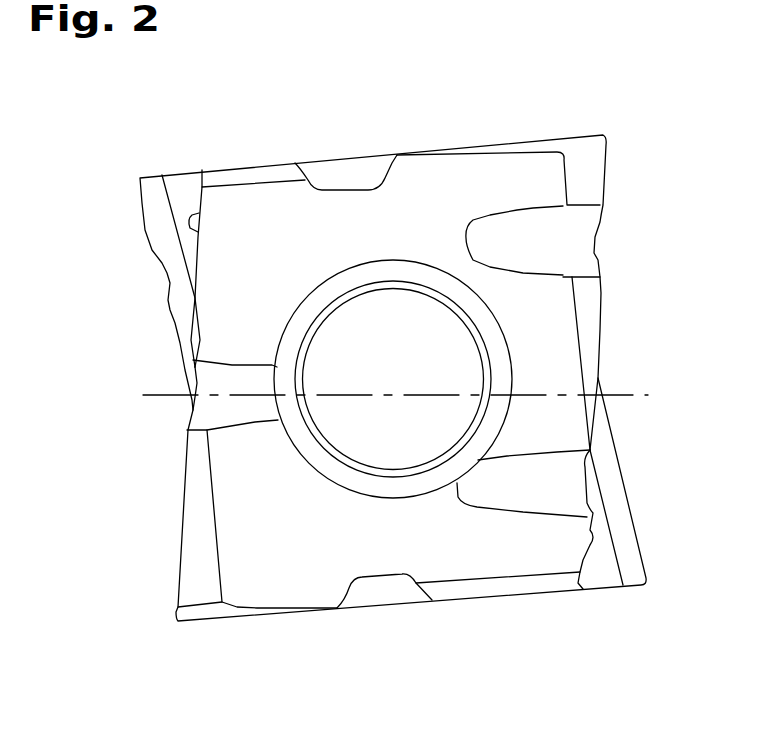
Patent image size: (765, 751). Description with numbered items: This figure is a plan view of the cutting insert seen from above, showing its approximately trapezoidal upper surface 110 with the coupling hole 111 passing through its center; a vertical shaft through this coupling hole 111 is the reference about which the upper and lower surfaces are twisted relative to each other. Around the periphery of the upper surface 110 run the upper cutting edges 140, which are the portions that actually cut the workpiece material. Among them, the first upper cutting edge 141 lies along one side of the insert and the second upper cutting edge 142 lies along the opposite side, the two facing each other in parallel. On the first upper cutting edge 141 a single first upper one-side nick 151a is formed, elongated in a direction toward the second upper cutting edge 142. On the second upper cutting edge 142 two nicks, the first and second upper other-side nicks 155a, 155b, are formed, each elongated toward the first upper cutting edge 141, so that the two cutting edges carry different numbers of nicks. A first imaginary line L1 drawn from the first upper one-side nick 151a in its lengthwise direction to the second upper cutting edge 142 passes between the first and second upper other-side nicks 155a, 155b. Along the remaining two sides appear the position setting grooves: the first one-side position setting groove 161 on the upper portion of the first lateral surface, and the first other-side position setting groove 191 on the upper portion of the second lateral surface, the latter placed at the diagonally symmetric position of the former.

The upper surface 110 is at (477, 172).
The coupling hole 111 is at (363, 423).
The upper cutting edges 140 is at (393, 380).
The first upper cutting edge 141 is at (192, 333).
The second upper cutting edge 142 is at (600, 303).
The first upper one-side nick 151a is at (217, 412).
The first upper other-side nick 155a is at (573, 244).
The second upper other-side nick 155b is at (558, 490).
The first one-side position setting groove 161 is at (383, 589).
The first other-side position setting groove 191 is at (348, 172).
The first imaginary line L1 is at (630, 395).